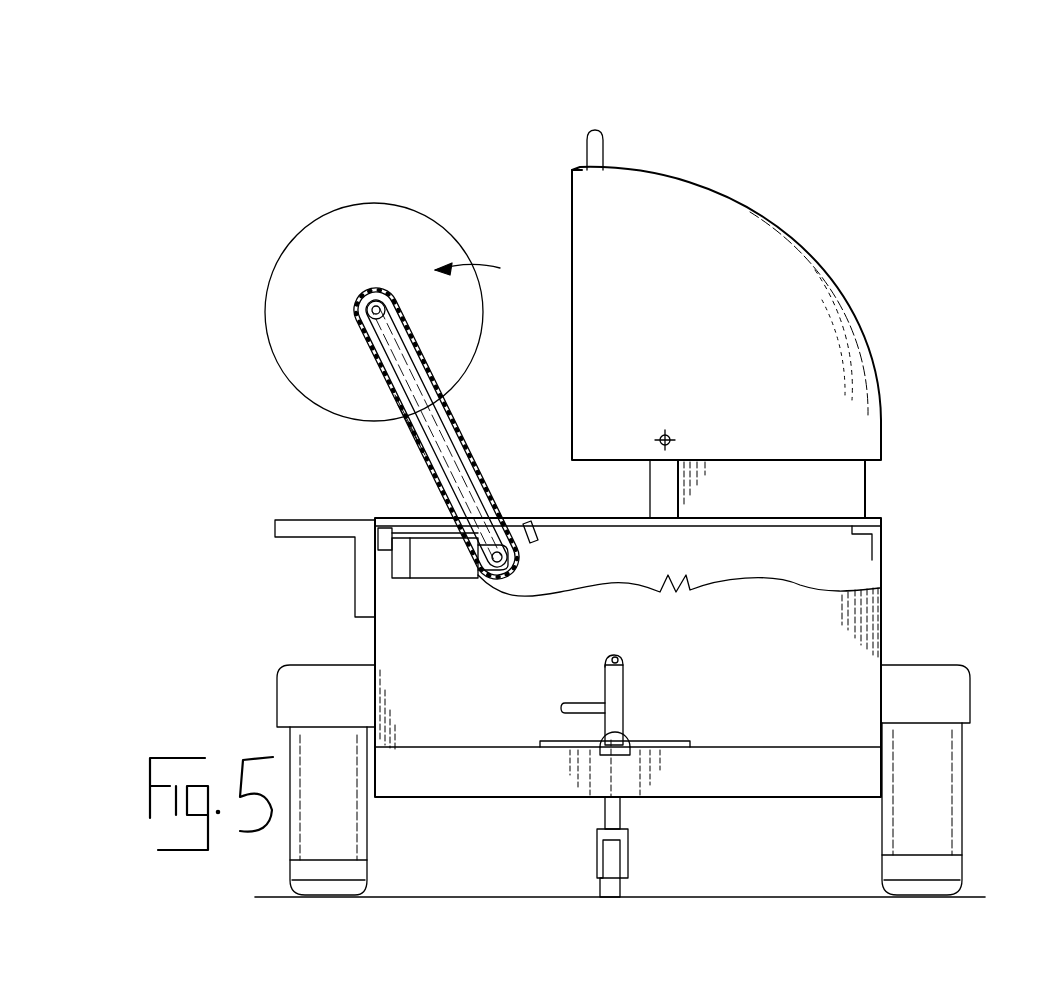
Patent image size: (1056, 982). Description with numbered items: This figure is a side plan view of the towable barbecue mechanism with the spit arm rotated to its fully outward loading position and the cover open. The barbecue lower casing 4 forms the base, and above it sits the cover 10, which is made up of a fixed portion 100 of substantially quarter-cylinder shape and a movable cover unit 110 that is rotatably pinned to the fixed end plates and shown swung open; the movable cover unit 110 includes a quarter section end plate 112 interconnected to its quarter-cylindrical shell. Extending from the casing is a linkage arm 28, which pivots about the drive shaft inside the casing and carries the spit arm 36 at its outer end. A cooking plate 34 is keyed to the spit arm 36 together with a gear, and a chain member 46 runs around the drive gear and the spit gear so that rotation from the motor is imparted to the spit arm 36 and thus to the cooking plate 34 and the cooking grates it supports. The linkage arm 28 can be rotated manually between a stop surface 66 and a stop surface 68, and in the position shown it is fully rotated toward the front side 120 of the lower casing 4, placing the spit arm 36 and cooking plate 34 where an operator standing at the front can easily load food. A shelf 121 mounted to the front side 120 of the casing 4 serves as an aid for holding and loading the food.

The barbecue lower casing 4 is at (882, 618).
The cover 10 is at (740, 198).
The linkage arm 28 is at (441, 445).
The cooking plate 34 is at (282, 320).
The spit arm 36 is at (376, 305).
The chain member 46 is at (410, 435).
The stop surface 66 is at (450, 530).
The stop surface 68 is at (538, 530).
The fixed portion 100 is at (827, 463).
The movable cover unit 110 is at (797, 299).
The quarter section end plate 112 is at (712, 384).
The front side 120 is at (375, 643).
The shelf 121 is at (365, 580).